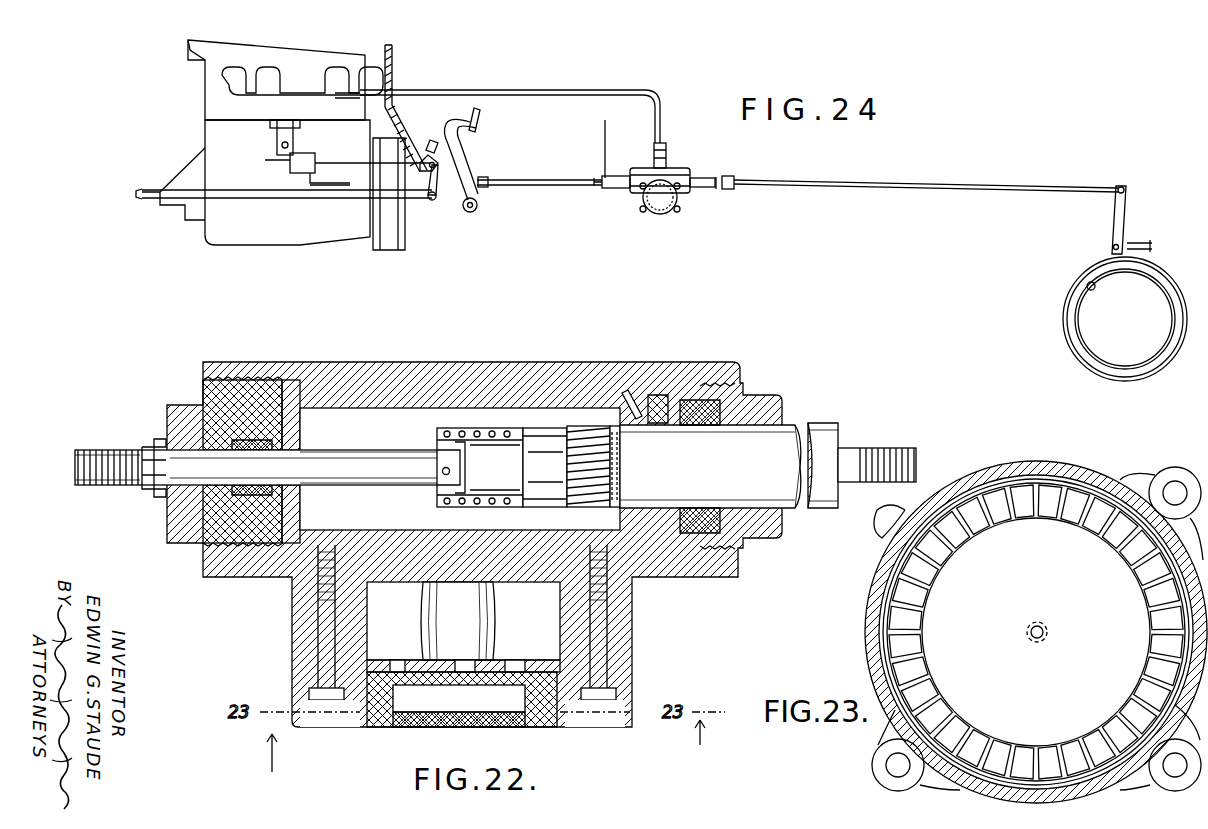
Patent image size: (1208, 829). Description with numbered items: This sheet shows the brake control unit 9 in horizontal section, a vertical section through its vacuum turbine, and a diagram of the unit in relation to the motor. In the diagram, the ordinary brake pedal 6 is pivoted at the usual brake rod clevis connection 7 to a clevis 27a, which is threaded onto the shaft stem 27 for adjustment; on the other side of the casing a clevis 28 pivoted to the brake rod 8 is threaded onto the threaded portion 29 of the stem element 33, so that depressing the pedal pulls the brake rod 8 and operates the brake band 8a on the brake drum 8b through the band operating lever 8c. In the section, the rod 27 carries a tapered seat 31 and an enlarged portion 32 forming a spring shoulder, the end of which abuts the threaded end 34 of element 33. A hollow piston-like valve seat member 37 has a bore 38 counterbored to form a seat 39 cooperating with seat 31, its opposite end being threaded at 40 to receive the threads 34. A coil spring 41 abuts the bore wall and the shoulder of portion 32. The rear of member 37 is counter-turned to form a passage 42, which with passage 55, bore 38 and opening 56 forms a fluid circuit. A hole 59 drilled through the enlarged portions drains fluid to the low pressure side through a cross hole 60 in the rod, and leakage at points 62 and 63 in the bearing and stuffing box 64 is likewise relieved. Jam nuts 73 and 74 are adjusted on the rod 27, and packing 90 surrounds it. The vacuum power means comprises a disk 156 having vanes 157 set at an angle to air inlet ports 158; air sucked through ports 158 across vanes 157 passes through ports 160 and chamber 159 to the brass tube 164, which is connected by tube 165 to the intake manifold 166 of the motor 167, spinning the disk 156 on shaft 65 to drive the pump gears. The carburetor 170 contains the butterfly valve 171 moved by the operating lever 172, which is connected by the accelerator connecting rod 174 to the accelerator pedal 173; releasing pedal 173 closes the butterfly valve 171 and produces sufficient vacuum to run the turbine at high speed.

In FIG. 24, the brake pedal 6 is at (480, 121).
In FIG. 24, the brake rod clevis connection 7 is at (488, 186).
In FIG. 24, the brake rod 8 is at (903, 190).
In FIG. 24, the brake band 8a is at (1064, 334).
In FIG. 24, the brake drum 8b is at (1090, 287).
In FIG. 24, the band operating lever 8c is at (1125, 222).
In FIG. 24, the brake control unit 9 is at (690, 170).
In FIG. 22, the brake control unit 9 is at (410, 362).
In FIG. 24, the shaft stem 27 is at (617, 178).
In FIG. 22, the shaft stem 27 is at (78, 448).
In FIG. 24, the clevis 27a is at (592, 139).
In FIG. 24, the clevis 28 is at (730, 190).
In FIG. 24, the threaded portion 29 is at (722, 190).
In FIG. 22, the threaded portion 29 is at (886, 450).
In FIG. 22, the seat 31 is at (440, 520).
In FIG. 22, the enlarged portion 32 is at (560, 430).
In FIG. 24, the stem element 33 is at (713, 178).
In FIG. 22, the stem element 33 is at (832, 428).
In FIG. 22, the threaded end 34 is at (592, 458).
In FIG. 22, the hollow piston-like valve seat member 37 is at (490, 430).
In FIG. 22, the bore 38 is at (476, 432).
In FIG. 22, the seat 39 is at (462, 430).
In FIG. 22, the threads 40 is at (627, 425).
In FIG. 22, the coil spring 41 is at (505, 430).
In FIG. 22, the passage 42 is at (548, 450).
In FIG. 22, the passage 55 is at (530, 430).
In FIG. 22, the opening 56 is at (440, 492).
In FIG. 22, the hole 59 is at (430, 456).
In FIG. 22, the pin 60 is at (442, 474).
In FIG. 22, the leakage point 62 is at (640, 412).
In FIG. 22, the leakage point 63 is at (652, 423).
In FIG. 22, the bearing and stuffing box 64 is at (700, 415).
In FIG. 23, the shaft 65 is at (1040, 626).
In FIG. 22, the jam nut 73 is at (150, 496).
In FIG. 22, the jam nut 74 is at (143, 440).
In FIG. 22, the packing 90 is at (245, 445).
In FIG. 22, the disk 156 is at (473, 700).
In FIG. 23, the disk 156 is at (1017, 533).
In FIG. 22, the vanes 157 is at (390, 697).
In FIG. 23, the vanes 157 is at (903, 633).
In FIG. 24, the air inlet ports 158 is at (668, 213).
In FIG. 22, the air inlet ports 158 is at (418, 728).
In FIG. 22, the chamber 159 is at (625, 616).
In FIG. 22, the ports 160 is at (462, 660).
In FIG. 24, the brass tube 164 is at (667, 152).
In FIG. 24, the tube 165 is at (563, 90).
In FIG. 24, the intake manifold 166 is at (303, 98).
In FIG. 24, the motor 167 is at (353, 68).
In FIG. 24, the carburetor 170 is at (275, 128).
In FIG. 24, the butterfly valve 171 is at (283, 143).
In FIG. 24, the butterfly valve operating lever 172 is at (302, 152).
In FIG. 24, the accelerator pedal 173 is at (433, 142).
In FIG. 24, the accelerator connecting rod 174 is at (367, 163).